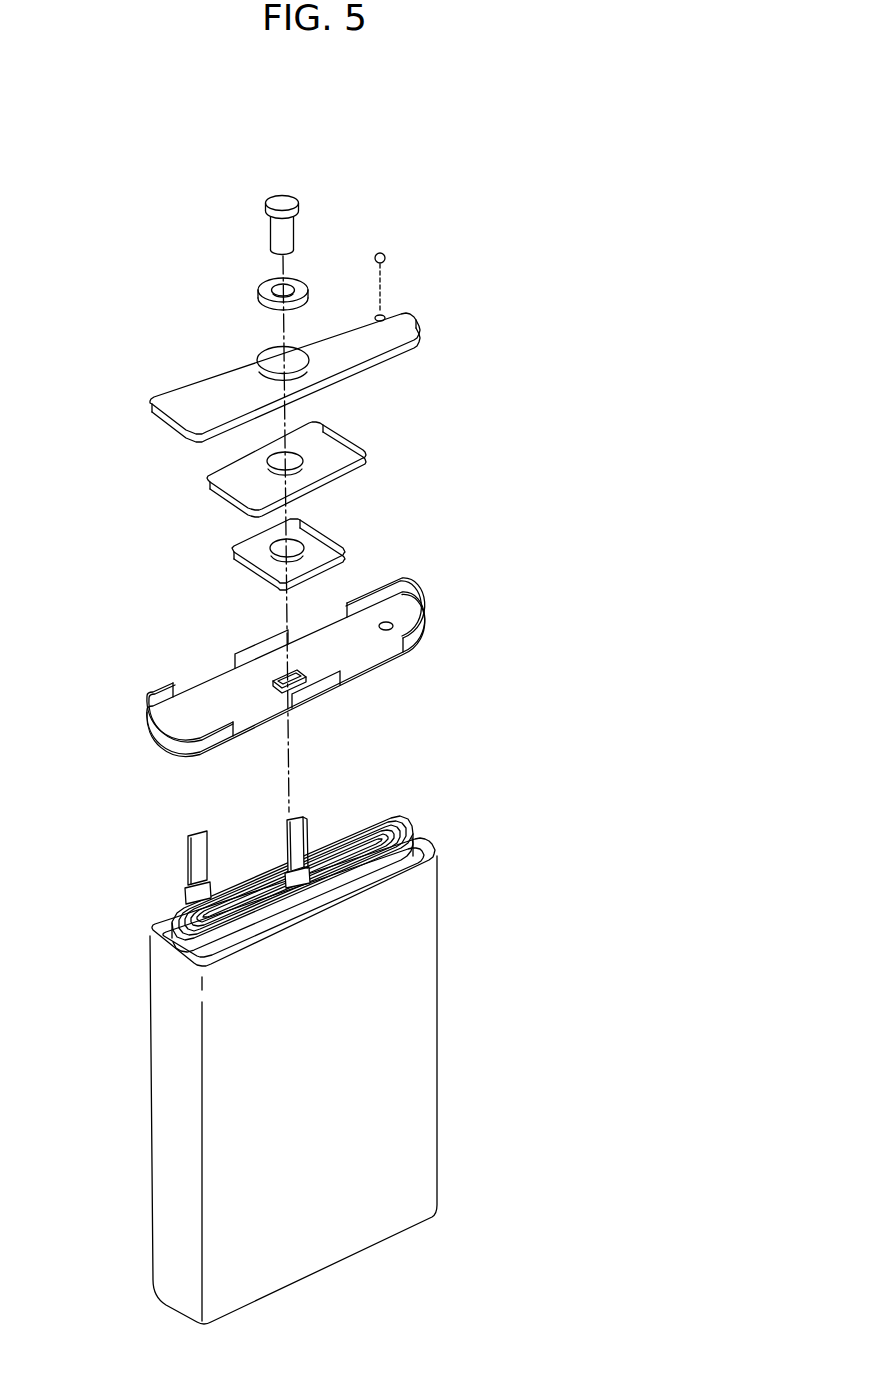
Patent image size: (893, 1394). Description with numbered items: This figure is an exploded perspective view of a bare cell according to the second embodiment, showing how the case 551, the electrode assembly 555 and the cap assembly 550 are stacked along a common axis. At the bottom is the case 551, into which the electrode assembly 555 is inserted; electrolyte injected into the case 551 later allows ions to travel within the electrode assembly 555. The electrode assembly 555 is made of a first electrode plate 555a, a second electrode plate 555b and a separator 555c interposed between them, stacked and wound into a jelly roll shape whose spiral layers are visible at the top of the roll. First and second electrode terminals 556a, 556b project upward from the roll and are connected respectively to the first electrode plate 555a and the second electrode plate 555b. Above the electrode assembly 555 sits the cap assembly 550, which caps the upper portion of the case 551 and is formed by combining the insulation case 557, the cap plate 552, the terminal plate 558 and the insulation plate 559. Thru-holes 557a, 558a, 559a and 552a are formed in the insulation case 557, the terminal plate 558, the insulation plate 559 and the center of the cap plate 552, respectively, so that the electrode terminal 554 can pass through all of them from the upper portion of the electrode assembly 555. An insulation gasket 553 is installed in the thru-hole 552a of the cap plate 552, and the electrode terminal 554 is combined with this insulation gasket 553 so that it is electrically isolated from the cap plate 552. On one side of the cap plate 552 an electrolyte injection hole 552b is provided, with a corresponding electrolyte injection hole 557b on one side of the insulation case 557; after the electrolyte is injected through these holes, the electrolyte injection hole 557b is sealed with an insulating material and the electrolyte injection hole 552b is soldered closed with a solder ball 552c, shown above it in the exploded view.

The cap assembly 550 is at (518, 458).
The case 551 is at (417, 1015).
The cap plate 552 is at (274, 352).
The thru-hole 552a is at (270, 357).
The electrolyte injection hole 552b is at (384, 316).
The solder ball 552c is at (382, 252).
The insulation gasket 553 is at (263, 283).
The electrode terminal 554 is at (276, 196).
The electrode assembly 555 is at (336, 836).
The first electrode plate 555a is at (405, 828).
The second electrode plate 555b is at (386, 827).
The separator 555c is at (398, 827).
The first electrode terminal 556a is at (285, 845).
The second electrode terminal 556b is at (198, 865).
The insulation case 557 is at (273, 654).
The thru-hole 557a is at (280, 673).
The electrolyte injection hole 557b is at (388, 622).
The terminal plate 558 is at (280, 539).
The thru-hole 558a is at (297, 547).
The insulation plate 559 is at (285, 455).
The thru-hole 559a is at (302, 453).